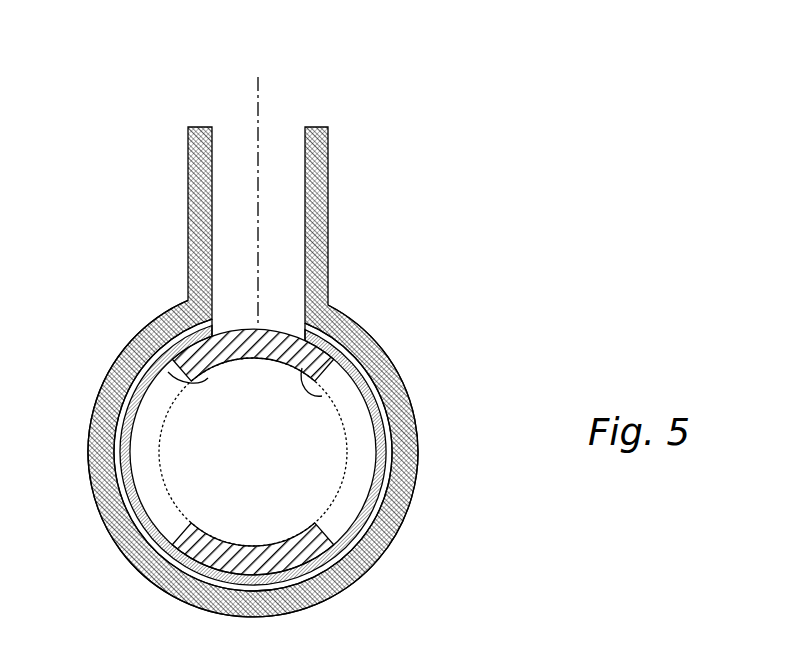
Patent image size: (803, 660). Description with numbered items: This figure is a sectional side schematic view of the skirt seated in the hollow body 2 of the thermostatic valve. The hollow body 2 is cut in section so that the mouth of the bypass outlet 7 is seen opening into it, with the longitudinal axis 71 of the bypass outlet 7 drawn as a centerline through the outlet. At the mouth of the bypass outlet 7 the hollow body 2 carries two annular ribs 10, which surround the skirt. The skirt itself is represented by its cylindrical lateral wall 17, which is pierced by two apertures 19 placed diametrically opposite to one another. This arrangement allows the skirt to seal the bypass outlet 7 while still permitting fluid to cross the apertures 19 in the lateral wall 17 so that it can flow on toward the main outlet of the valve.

The hollow body 2 is at (330, 208).
The bypass outlet 7 is at (284, 164).
The longitudinal axis of the bypass outlet 71 is at (259, 88).
The annular ribs 10 is at (368, 338).
The cylindrical lateral wall 17 is at (288, 337).
The apertures 19 is at (354, 410).